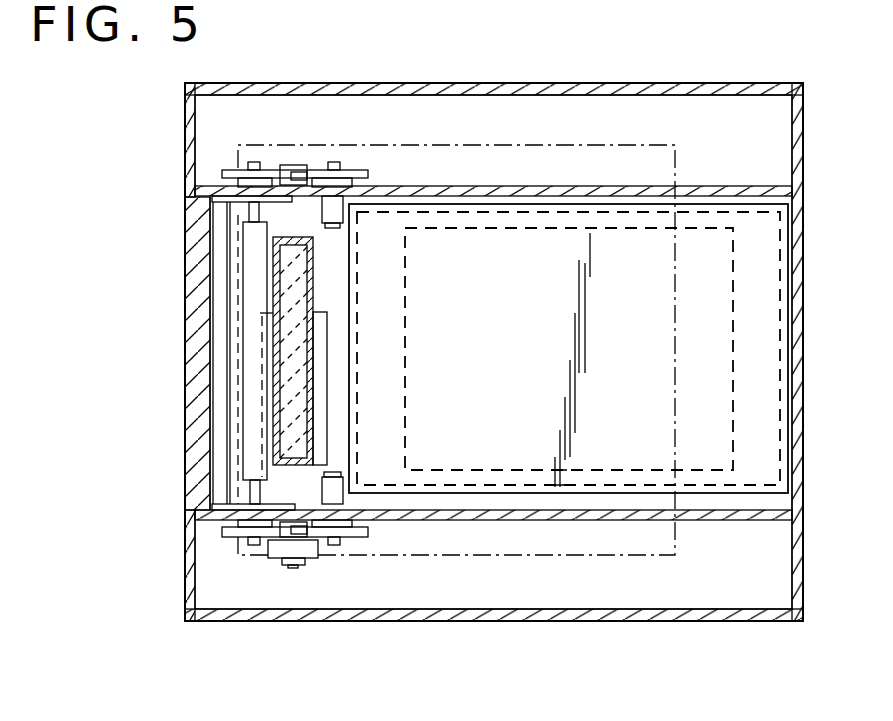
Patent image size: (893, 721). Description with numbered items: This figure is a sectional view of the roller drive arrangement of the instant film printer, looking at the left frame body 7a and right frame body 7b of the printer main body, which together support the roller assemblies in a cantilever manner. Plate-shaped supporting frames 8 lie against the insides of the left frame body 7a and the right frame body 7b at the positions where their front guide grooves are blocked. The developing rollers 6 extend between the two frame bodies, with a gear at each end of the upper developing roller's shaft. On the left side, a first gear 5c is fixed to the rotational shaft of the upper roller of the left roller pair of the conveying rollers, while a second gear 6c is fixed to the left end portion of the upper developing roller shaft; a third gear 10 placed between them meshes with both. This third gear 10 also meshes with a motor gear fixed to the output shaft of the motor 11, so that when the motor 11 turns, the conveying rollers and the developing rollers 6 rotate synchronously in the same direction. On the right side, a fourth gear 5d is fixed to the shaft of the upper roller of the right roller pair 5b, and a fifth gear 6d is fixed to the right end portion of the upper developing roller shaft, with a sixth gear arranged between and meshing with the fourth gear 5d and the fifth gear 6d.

The right roller pair 5b is at (343, 215).
The first gear 5c is at (365, 537).
The fourth gear 5d is at (363, 168).
The developing rollers 6 is at (250, 297).
The second gear 6c is at (230, 537).
The fifth gear 6d is at (227, 168).
The left frame body 7a is at (722, 520).
The right frame body 7b is at (694, 185).
The supporting frames 8 is at (222, 207).
The third gear 10 is at (308, 552).
The motor 11 is at (293, 165).